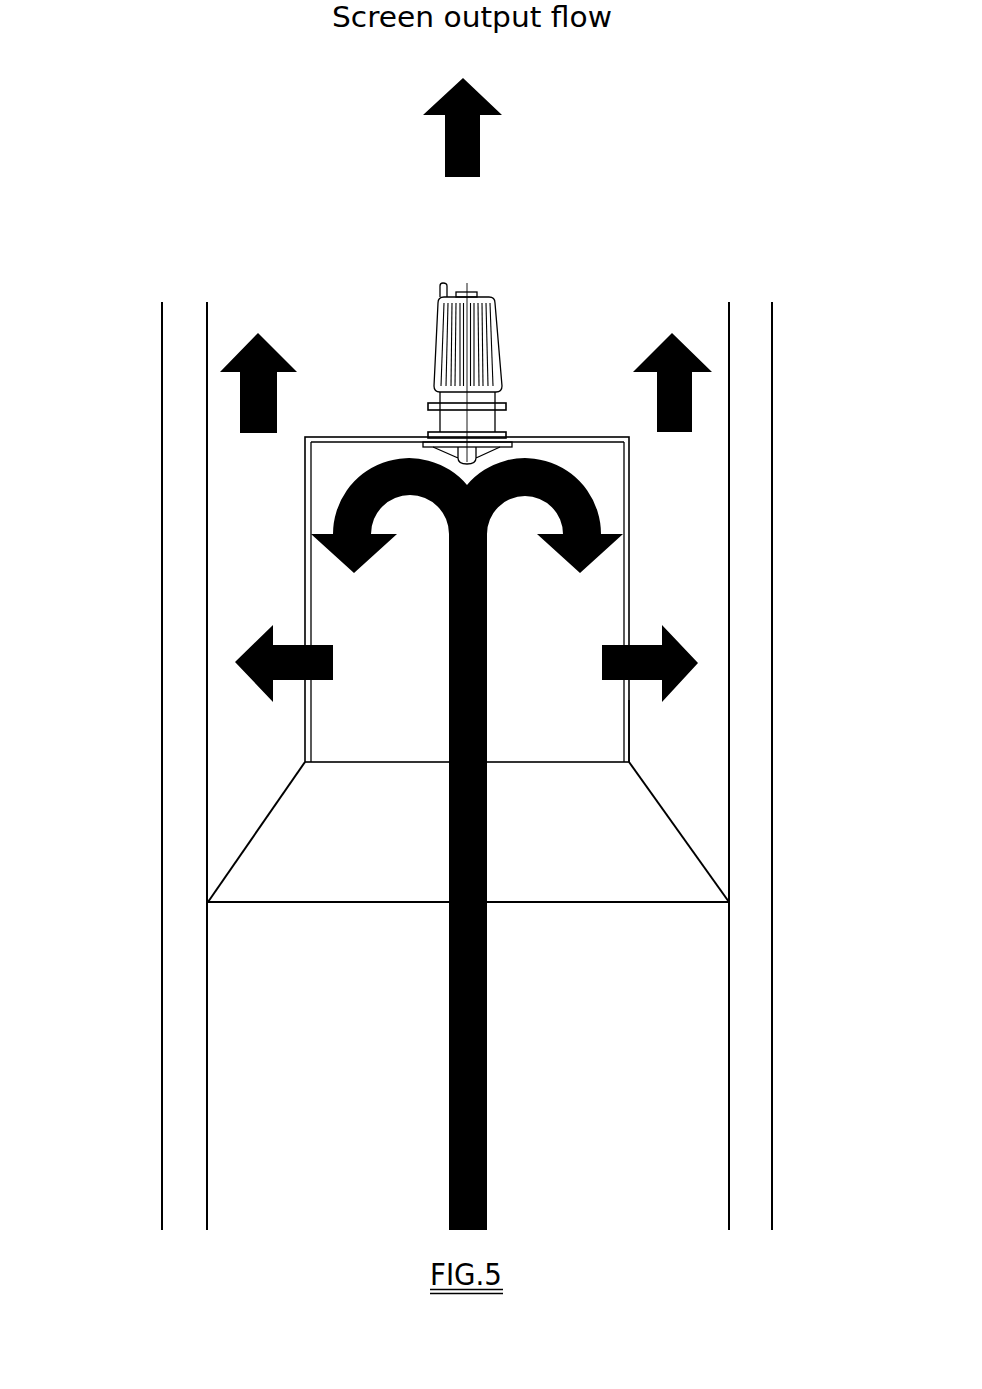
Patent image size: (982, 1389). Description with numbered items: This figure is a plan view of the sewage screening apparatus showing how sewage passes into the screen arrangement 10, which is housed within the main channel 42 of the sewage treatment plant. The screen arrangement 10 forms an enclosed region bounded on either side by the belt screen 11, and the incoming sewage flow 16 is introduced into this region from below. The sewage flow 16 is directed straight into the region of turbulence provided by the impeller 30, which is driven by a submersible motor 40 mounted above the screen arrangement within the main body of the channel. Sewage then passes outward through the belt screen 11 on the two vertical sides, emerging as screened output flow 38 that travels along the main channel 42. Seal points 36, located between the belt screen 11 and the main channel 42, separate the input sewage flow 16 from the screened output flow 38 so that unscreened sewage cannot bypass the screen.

The screen arrangement 10 is at (631, 718).
The belt screen 11 is at (630, 583).
The sewage flow 16 is at (489, 1052).
The impeller 30 is at (505, 437).
The seal points 36 is at (682, 833).
The screened output flow 38 is at (480, 142).
The submersible motor 40 is at (501, 298).
The main channel 42 is at (188, 1040).